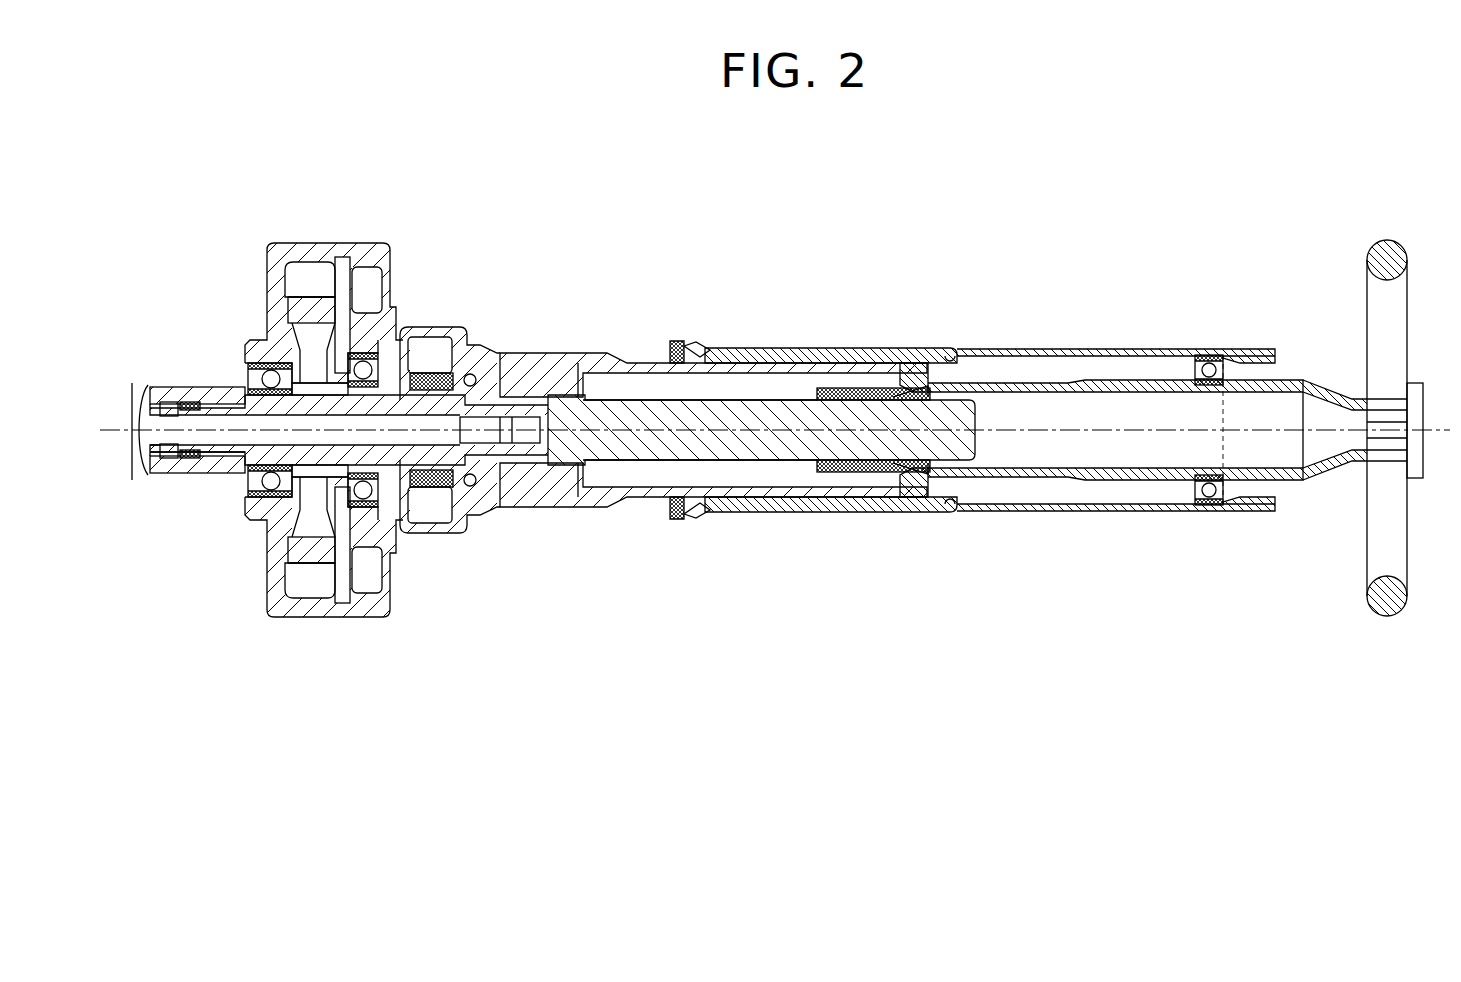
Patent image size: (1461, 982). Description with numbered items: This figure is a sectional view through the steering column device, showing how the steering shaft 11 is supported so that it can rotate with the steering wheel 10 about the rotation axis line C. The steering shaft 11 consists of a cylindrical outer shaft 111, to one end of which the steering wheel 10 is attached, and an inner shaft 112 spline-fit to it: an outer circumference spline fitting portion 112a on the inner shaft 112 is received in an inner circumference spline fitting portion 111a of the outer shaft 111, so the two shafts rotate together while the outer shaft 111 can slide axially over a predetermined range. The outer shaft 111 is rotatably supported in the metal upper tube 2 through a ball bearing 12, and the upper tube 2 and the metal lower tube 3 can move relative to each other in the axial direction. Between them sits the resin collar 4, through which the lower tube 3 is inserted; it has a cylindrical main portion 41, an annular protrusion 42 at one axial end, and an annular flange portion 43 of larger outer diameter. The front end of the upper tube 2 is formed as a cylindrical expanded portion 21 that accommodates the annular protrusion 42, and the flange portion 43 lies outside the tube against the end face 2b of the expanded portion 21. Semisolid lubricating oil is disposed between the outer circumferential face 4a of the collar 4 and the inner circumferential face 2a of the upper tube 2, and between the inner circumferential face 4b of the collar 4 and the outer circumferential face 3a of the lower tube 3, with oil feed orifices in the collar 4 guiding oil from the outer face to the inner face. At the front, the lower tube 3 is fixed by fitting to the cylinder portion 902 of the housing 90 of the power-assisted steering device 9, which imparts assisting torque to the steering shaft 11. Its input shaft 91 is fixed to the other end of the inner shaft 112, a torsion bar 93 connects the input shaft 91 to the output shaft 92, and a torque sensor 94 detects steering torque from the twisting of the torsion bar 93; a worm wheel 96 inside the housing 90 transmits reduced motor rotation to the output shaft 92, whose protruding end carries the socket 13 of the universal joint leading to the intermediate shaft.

The upper tube 2 is at (1037, 350).
The inner circumferential face of the upper tube 2a is at (958, 360).
The end face of the expanded portion 2b is at (672, 512).
The lower tube 3 is at (592, 503).
The outer circumferential face of the lower tube 3a is at (907, 370).
The collar 4 is at (790, 296).
The outer circumferential face of the collar 4a is at (744, 500).
The inner circumferential face of the collar 4b is at (775, 505).
The power-assisted steering device 9 is at (265, 204).
The steering wheel 10 is at (1390, 247).
The steering shaft 11 is at (756, 323).
The ball bearing 12 is at (1210, 368).
The socket 13 is at (178, 395).
The expanded portion 21 is at (688, 515).
The main portion 41 is at (737, 350).
The annular protrusion 42 is at (691, 345).
The flange portion 43 is at (654, 316).
The housing 90 is at (330, 245).
The input shaft 91 is at (493, 467).
The output shaft 92 is at (218, 445).
The torsion bar 93 is at (395, 425).
The torque sensor 94 is at (455, 347).
The worm wheel 96 is at (288, 287).
The cylinder portion 902 is at (553, 373).
The outer shaft 111 is at (873, 344).
The inner circumference spline fitting portion 111a is at (868, 473).
The inner shaft 112 is at (768, 399).
The outer circumference spline fitting portion 112a is at (937, 460).
The rotation axis line C is at (1428, 440).